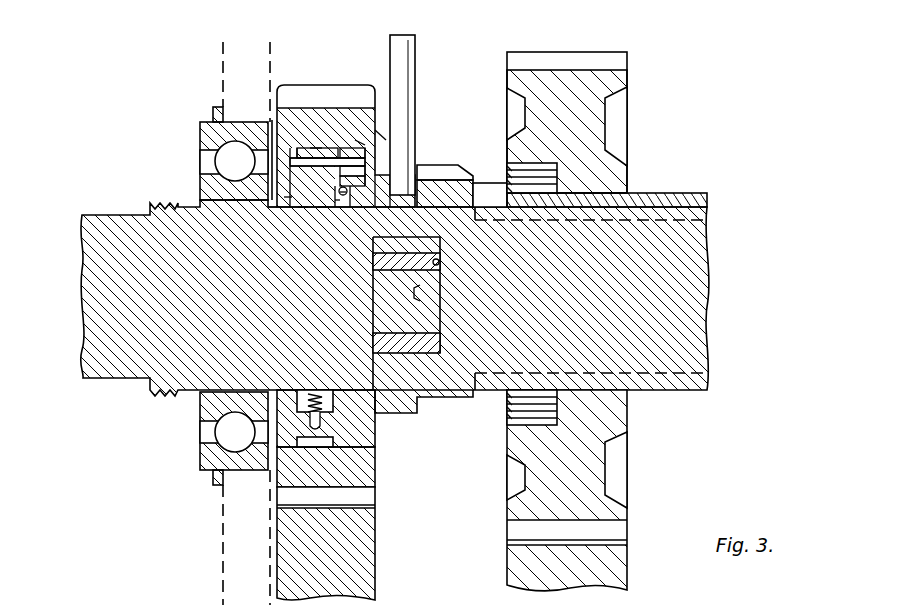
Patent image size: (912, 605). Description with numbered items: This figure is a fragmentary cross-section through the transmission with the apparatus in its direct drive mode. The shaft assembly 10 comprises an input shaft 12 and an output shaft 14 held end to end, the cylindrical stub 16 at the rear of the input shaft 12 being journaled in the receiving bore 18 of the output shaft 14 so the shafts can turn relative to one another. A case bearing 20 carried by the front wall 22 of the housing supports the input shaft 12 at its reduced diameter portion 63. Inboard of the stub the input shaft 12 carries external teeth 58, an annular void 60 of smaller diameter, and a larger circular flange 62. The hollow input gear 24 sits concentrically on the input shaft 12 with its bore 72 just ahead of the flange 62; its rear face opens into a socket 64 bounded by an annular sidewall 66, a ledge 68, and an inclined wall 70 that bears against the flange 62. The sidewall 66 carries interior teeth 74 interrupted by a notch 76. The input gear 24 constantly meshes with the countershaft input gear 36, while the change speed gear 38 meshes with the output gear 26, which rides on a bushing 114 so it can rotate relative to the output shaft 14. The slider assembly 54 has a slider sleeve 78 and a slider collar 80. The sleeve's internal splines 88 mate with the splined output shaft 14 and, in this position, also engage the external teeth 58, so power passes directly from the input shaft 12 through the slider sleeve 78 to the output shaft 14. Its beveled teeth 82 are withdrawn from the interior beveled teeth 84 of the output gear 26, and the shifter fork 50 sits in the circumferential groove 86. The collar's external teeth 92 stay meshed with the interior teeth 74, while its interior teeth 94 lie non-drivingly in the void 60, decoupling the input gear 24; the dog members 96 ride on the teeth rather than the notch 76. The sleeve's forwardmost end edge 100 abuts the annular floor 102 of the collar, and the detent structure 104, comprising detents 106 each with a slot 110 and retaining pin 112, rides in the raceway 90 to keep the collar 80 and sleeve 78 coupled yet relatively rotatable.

The shaft assembly 10 is at (92, 198).
The input shaft 12 is at (90, 290).
The output shaft 14 is at (708, 300).
The cylindrical stub 16 is at (418, 327).
The receiving bore 18 is at (437, 264).
The case bearing 20 is at (205, 140).
The front wall 22 is at (223, 545).
The input gear 24 is at (333, 82).
The output gear 26 is at (614, 52).
The countershaft input gear 36 is at (360, 571).
The change speed gear 38 is at (618, 572).
The shifter fork 50 is at (413, 46).
The slider assembly 54 is at (463, 137).
The external teeth 58 is at (370, 217).
The annular void 60 is at (323, 212).
The circular flange 62 is at (290, 412).
The reduced diameter portion 63 is at (236, 201).
The socket 64 is at (366, 150).
The annular sidewall 66 is at (343, 148).
The annular ledge 68 is at (300, 148).
The inclined wall 70 is at (270, 212).
The bore 72 is at (279, 392).
The interior teeth 74 is at (325, 447).
The notch 76 is at (357, 442).
The slider sleeve 78 is at (465, 158).
The slider collar 80 is at (372, 166).
The beveled teeth 82 is at (470, 172).
The interior beveled teeth 84 is at (546, 170).
The circumferential groove 86 is at (411, 402).
The internal splines 88 is at (458, 206).
The raceway 90 is at (343, 196).
The external teeth 92 is at (318, 146).
The interior teeth 94 is at (303, 210).
The dog member 96 is at (318, 425).
The forwardmost end edge 100 is at (290, 198).
The annular floor 102 is at (337, 206).
The detent structure 104 is at (363, 140).
The detent 106 is at (385, 130).
The slot 110 is at (362, 170).
The retaining pin 112 is at (352, 164).
The bushing 114 is at (666, 194).